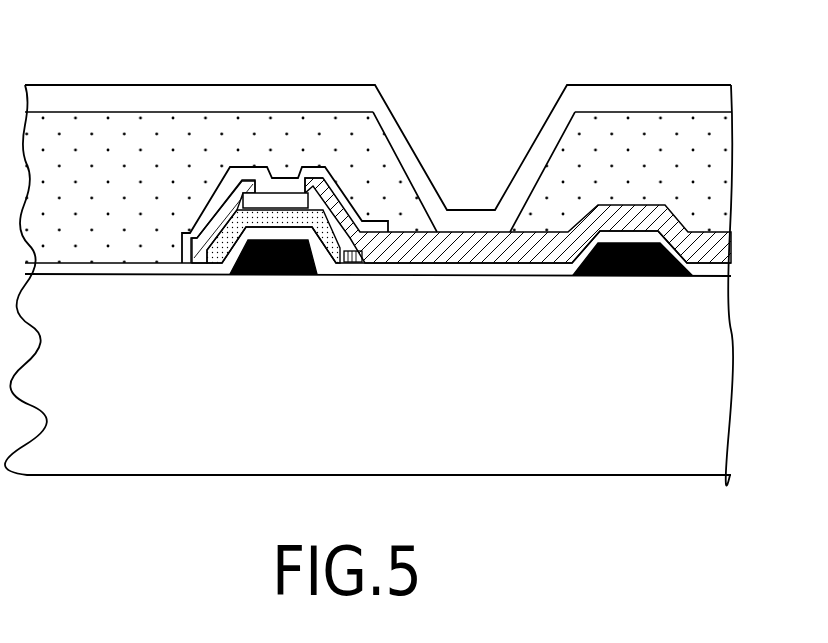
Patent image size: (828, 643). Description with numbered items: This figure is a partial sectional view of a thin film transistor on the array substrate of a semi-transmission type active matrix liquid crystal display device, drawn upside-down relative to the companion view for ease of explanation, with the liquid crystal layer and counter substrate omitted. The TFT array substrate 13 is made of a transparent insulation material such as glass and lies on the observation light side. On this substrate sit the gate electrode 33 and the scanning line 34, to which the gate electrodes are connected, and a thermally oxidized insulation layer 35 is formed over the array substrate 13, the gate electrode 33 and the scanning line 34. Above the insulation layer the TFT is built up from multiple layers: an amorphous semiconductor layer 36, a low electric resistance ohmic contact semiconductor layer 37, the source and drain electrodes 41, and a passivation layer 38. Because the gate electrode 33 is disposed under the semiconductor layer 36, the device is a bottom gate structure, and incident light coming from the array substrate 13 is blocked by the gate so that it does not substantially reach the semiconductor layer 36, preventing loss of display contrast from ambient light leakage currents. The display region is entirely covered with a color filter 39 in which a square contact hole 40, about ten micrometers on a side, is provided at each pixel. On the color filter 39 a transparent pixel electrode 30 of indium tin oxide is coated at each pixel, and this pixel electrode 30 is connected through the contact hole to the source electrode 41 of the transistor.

The TFT array substrate 13 is at (723, 392).
The pixel electrode 30 is at (367, 90).
The gate electrode 33 is at (277, 276).
The scanning line 34 is at (647, 278).
The thermally oxidized insulation layer 35 is at (725, 270).
The amorphous semiconductor layer 36 is at (335, 258).
The low electric resistance semiconductor layer 37 is at (367, 256).
The passivation layer 38 is at (278, 178).
The color filter 39 is at (592, 140).
The contact hole 40 is at (483, 132).
The source and drain electrodes 41 is at (317, 178).